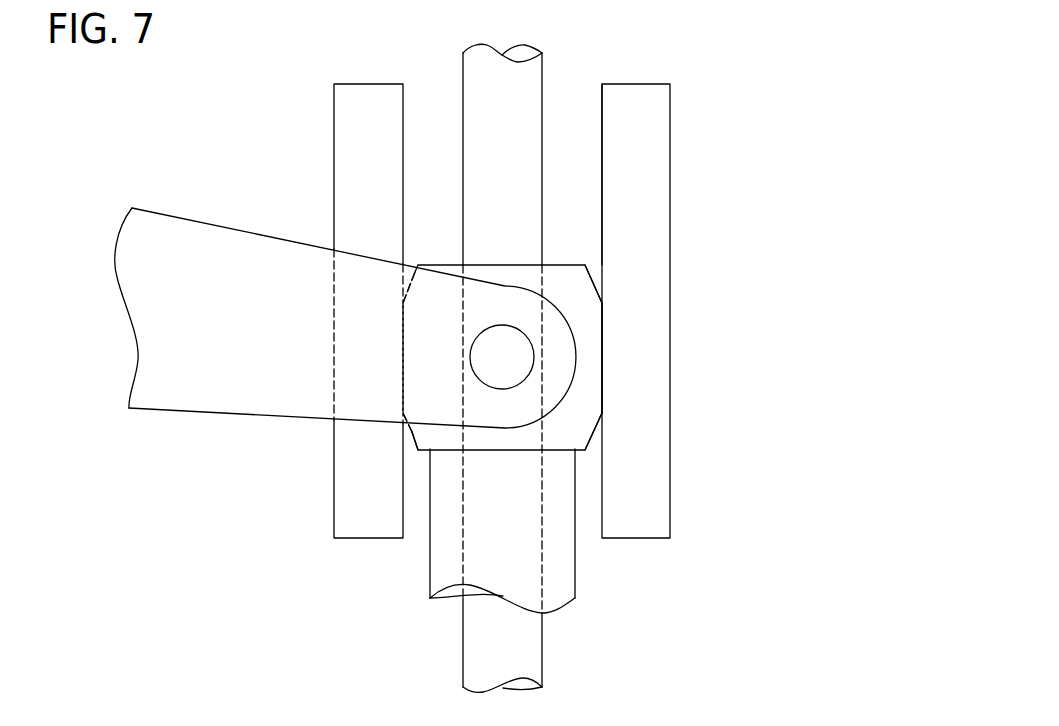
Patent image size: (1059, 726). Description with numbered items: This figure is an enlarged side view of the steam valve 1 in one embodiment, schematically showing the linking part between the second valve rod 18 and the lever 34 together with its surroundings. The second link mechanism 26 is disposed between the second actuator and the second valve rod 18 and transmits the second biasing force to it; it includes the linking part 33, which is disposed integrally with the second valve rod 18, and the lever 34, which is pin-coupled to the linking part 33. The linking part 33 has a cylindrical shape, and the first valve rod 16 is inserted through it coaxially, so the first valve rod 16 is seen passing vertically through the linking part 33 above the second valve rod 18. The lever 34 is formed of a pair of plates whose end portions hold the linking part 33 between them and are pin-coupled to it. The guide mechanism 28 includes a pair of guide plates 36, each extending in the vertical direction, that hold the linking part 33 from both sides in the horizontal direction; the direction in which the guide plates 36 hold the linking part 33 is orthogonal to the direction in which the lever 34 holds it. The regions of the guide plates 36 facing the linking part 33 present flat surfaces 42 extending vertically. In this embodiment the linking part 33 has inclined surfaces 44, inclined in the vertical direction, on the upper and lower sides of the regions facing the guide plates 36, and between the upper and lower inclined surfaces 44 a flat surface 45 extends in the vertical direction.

The steam valve 1 is at (763, 75).
The guide mechanism 28 is at (732, 145).
The first valve rod 16 is at (543, 87).
The second valve rod 18 is at (577, 567).
The guide plates 36 is at (335, 208).
The flat surface 42 is at (600, 247).
The linking part 33 is at (585, 355).
The inclined surfaces 44 is at (409, 262).
The flat surface 45 is at (603, 330).
The second link mechanism 26 is at (160, 212).
The lever 34 is at (213, 226).